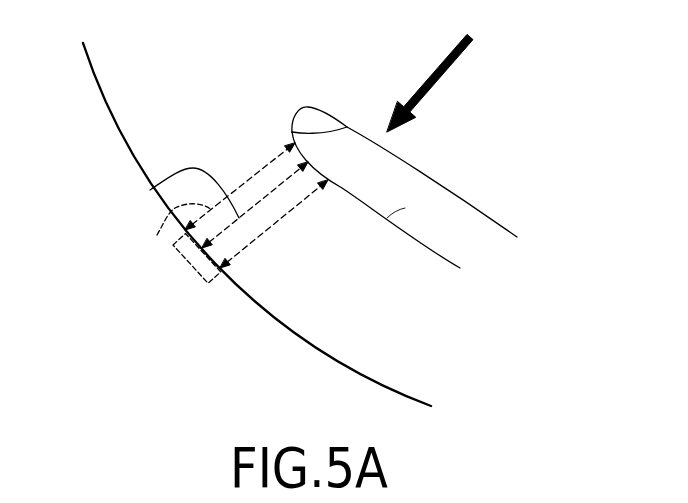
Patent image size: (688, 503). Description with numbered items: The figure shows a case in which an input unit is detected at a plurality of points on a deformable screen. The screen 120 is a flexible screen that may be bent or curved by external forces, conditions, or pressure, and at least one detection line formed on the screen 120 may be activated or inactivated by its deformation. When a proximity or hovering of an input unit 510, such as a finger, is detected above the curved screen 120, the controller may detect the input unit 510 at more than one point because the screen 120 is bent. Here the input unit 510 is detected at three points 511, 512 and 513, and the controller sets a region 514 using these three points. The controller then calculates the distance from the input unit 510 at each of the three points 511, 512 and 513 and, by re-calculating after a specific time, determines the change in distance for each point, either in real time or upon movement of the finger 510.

The screen 120 is at (118, 124).
The input unit 510 is at (455, 213).
The first point 511 is at (150, 190).
The second point 512 is at (157, 235).
The third point 513 is at (248, 245).
The region 514 is at (190, 264).